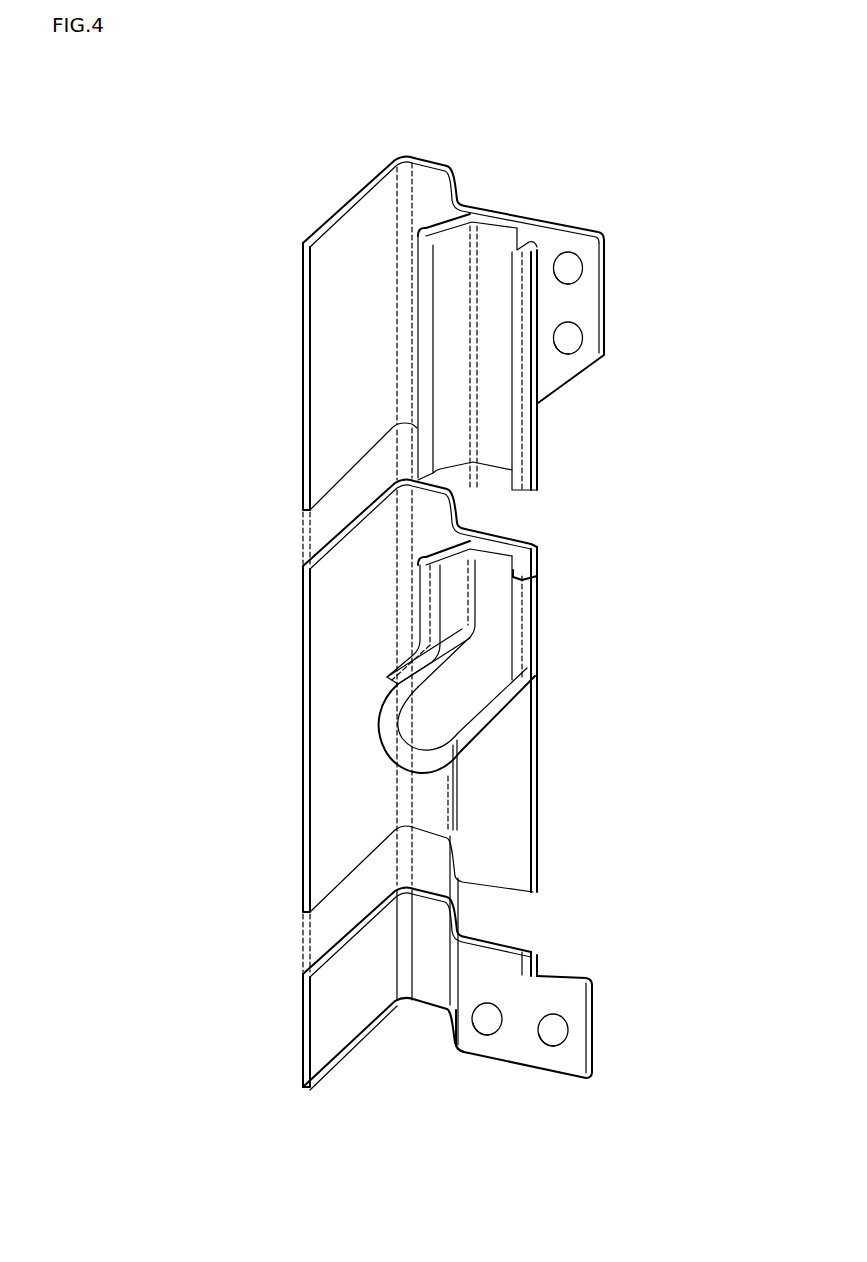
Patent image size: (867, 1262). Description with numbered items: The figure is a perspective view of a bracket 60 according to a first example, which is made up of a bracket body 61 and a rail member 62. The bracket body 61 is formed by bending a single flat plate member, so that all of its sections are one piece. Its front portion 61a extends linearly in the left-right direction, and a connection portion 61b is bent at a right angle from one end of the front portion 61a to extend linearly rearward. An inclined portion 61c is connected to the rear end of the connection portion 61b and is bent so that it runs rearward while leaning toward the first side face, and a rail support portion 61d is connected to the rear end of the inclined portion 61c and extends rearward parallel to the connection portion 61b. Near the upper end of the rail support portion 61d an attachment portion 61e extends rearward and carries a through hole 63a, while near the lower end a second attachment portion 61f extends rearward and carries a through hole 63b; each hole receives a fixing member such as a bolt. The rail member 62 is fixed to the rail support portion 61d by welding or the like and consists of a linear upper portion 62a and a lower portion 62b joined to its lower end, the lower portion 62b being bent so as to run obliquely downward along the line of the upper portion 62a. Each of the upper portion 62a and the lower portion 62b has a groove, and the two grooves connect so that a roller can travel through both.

The bracket 60 is at (297, 222).
The bracket body 61 is at (337, 97).
The front portion 61a is at (370, 183).
The connection portion 61b is at (432, 158).
The inclined portion 61c is at (463, 187).
The rail support portion 61d is at (488, 213).
The attachment portion 61e is at (588, 252).
The attachment portion 61f is at (566, 1000).
The rail member 62 is at (233, 533).
The upper portion 62a is at (425, 452).
The lower portion 62b is at (432, 670).
The through hole 63a is at (583, 342).
The through hole 63b is at (555, 1095).